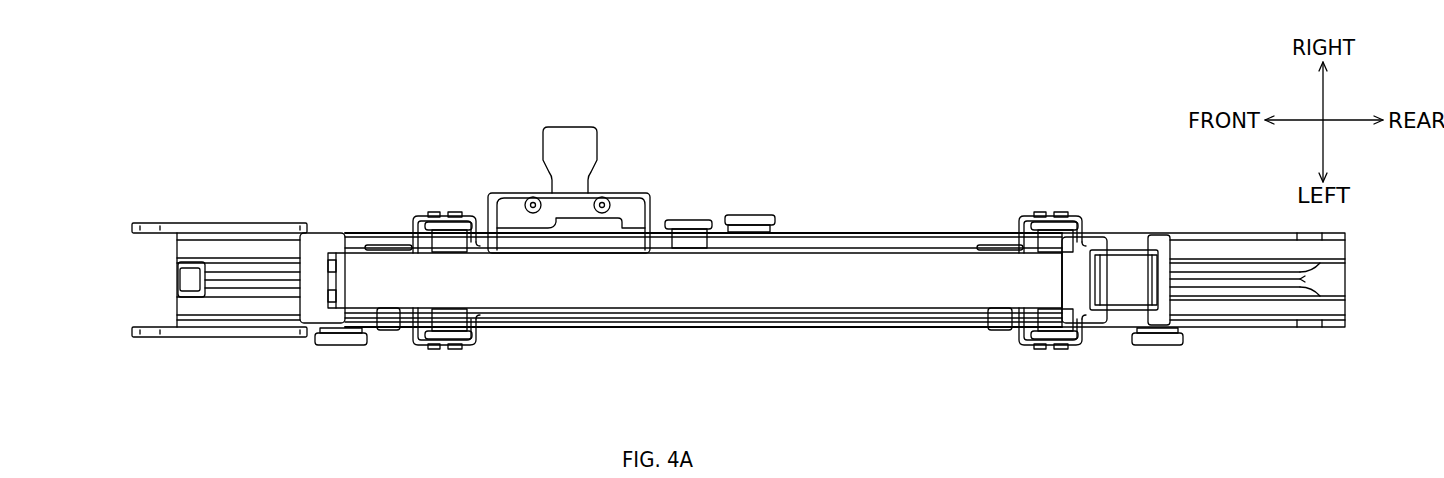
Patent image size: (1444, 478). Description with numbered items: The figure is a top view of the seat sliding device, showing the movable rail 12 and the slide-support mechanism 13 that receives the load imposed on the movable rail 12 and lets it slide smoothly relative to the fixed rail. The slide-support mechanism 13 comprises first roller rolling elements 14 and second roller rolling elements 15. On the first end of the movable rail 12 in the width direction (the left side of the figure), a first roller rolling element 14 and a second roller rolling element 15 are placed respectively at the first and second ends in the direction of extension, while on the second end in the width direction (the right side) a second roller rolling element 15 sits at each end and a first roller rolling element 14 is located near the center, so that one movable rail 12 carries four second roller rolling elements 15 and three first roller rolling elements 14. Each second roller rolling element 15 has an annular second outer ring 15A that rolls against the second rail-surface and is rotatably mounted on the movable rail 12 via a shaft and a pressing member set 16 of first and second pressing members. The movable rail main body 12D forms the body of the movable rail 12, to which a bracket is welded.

The movable rail 12 is at (882, 227).
The movable rail main body 12D is at (717, 330).
The slide-support mechanism 13 is at (435, 427).
The first roller rolling element 14 is at (767, 217).
The second roller rolling element 15 is at (422, 213).
The second outer ring 15A is at (417, 225).
The pressing member set 16 is at (457, 212).